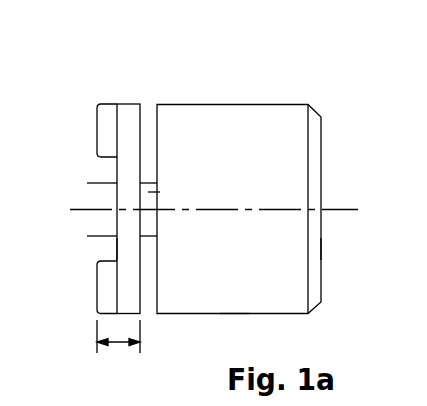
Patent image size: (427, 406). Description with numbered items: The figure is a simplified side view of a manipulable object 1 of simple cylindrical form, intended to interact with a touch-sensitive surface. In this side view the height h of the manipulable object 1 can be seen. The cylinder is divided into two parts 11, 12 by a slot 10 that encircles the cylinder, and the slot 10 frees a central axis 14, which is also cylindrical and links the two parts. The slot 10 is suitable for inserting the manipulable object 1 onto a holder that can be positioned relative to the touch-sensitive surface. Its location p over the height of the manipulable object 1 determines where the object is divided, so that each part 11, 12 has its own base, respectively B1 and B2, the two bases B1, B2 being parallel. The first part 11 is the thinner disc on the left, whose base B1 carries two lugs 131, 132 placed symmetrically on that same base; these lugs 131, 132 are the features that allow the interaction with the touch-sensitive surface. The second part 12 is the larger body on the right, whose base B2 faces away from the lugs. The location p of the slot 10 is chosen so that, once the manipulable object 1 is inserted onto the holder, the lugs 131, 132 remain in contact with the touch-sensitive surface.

The manipulable object 1 is at (350, 83).
The slot 10 is at (150, 97).
The first part 11 is at (142, 97).
The second part 12 is at (316, 97).
The lug 131 is at (88, 134).
The lug 132 is at (88, 288).
The central axis 14 is at (160, 192).
The first base B1 is at (105, 249).
The second base B2 is at (333, 249).
The height h is at (230, 324).
The location of the slot p is at (118, 344).